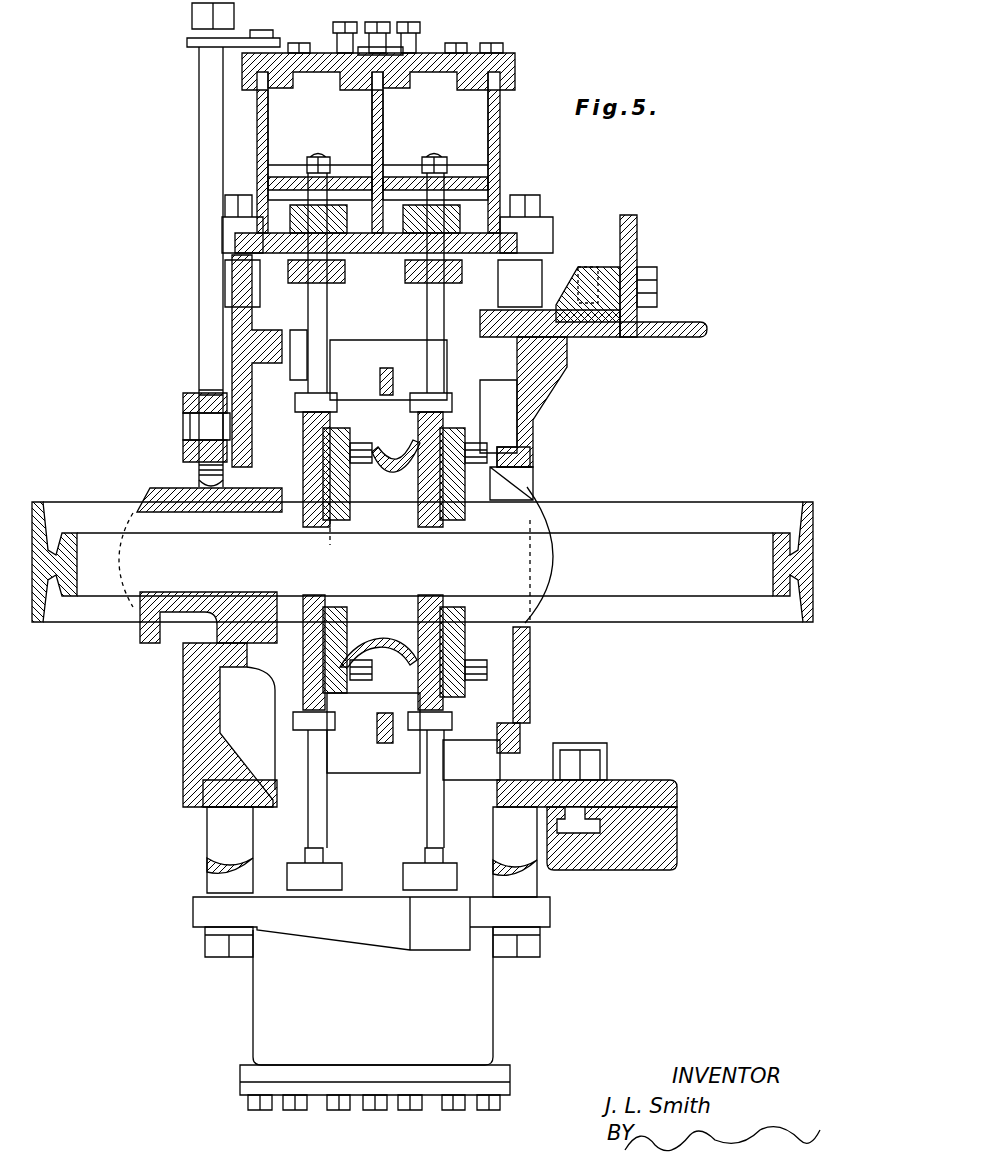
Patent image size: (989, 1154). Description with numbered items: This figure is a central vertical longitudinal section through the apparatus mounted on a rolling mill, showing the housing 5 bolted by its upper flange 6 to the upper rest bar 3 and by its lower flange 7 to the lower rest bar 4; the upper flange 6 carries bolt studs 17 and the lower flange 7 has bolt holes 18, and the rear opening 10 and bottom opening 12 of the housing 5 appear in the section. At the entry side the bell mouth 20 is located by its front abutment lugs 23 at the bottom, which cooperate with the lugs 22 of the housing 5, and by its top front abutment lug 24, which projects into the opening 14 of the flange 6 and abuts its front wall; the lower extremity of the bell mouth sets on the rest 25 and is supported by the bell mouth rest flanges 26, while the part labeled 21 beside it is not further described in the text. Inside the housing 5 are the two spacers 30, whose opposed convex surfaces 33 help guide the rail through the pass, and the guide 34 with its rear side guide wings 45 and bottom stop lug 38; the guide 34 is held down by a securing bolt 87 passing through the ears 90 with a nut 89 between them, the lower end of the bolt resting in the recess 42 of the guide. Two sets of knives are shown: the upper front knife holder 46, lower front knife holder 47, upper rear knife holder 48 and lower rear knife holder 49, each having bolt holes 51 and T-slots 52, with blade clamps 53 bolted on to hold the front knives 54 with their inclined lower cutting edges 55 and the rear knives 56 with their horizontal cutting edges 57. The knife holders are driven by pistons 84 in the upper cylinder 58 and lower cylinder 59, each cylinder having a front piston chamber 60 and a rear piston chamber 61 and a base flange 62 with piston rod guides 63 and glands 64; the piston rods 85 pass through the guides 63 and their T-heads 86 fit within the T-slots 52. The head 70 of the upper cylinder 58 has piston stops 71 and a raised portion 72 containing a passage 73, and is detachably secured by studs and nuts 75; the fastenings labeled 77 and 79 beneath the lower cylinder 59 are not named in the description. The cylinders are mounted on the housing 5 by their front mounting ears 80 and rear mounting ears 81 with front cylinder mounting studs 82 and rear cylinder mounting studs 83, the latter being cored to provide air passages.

The upper rest bar 3 is at (670, 320).
The lower rest bar 4 is at (677, 832).
The housing 5 is at (183, 710).
The upper flange 6 is at (620, 262).
The lower flange 7 is at (590, 760).
The rear opening 10 is at (183, 650).
The bottom opening 12 is at (397, 800).
The opening 14 is at (585, 337).
The bolt studs 17 is at (657, 280).
The bolt holes 18 is at (600, 790).
The bell mouth 20 is at (533, 445).
The frame block 21 is at (533, 480).
The lugs 22 is at (553, 748).
The front abutment lugs 23 is at (535, 735).
The front abutment lug 24 is at (560, 360).
The rest 25 is at (520, 760).
The bell mouth rest flanges 26 is at (497, 775).
The spacers 30 is at (387, 556).
The convex surfaces 33 is at (385, 625).
The guide 34 is at (160, 625).
The bottom stop lug 38 is at (220, 672).
The recess 42 is at (160, 488).
The rear side guide wings 45 is at (128, 595).
The upper front knife holder 46 is at (418, 527).
The lower front knife holder 47 is at (418, 696).
The upper rear knife holder 48 is at (303, 527).
The lower rear knife holder 49 is at (303, 605).
The bolt holes 51 is at (540, 590).
The T-slots 52 is at (443, 712).
The blade clamps 53 is at (465, 608).
The front knives 54 is at (465, 535).
The inclined lower cutting edges 55 is at (443, 595).
The rear knives 56 is at (340, 595).
The horizontal cutting edges 57 is at (330, 555).
The upper cylinder 58 is at (500, 155).
The lower cylinder 59 is at (375, 1011).
The front piston chamber 60 is at (435, 118).
The rear piston chamber 61 is at (320, 118).
The base flange 62 is at (352, 332).
The piston rod guides 63 is at (372, 253).
The glands 64 is at (403, 876).
The cylinder head 70 is at (515, 56).
The piston stops 71 is at (420, 85).
The raised portion 72 is at (467, 43).
The passage 73 is at (333, 30).
The studs and nuts 75 is at (420, 27).
The bolt 77 is at (320, 1110).
The bolt 79 is at (400, 1110).
The front mounting ears 80 is at (570, 900).
The rear mounting ears 81 is at (193, 900).
The front cylinder mounting studs 82 is at (493, 832).
The rear cylinder mounting studs 83 is at (207, 862).
The pistons 84 is at (402, 175).
The piston rods 85 is at (427, 830).
The T-heads 86 is at (452, 722).
The securing bolt 87 is at (199, 300).
The nut 89 is at (185, 428).
The ears 90 is at (185, 452).